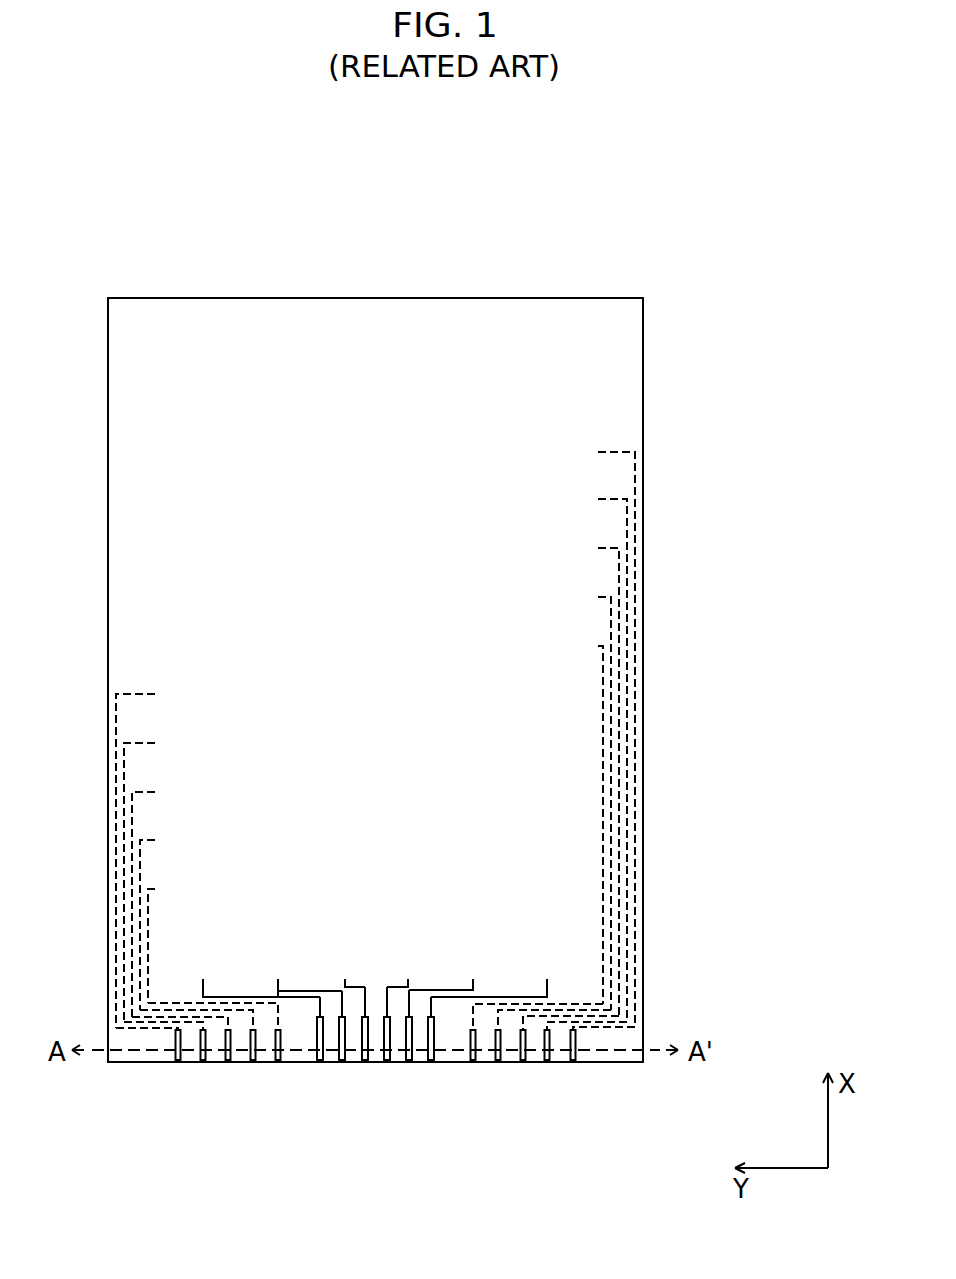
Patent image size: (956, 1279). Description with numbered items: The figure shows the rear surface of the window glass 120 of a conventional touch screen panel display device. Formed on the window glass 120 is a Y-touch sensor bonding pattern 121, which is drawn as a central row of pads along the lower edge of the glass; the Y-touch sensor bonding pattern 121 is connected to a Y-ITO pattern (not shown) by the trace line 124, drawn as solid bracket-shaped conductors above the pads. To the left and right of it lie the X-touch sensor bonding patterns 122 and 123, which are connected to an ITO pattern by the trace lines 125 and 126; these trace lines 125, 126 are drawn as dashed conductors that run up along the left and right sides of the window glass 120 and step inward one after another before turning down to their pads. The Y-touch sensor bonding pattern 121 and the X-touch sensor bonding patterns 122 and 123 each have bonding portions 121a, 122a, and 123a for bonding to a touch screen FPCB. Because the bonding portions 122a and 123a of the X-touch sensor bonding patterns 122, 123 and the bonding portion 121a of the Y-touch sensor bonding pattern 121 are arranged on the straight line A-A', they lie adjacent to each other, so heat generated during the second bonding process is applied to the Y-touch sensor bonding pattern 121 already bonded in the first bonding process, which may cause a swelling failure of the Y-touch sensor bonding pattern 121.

The window glass 120 is at (672, 265).
The Y-touch sensor bonding pattern 121 is at (305, 1019).
The bonding portion 121a is at (316, 1052).
The X-touch sensor bonding pattern 122 is at (166, 1034).
The bonding portion 122a is at (176, 1056).
The X-touch sensor bonding pattern 123 is at (588, 1034).
The bonding portion 123a is at (578, 1054).
The trace line 124 is at (217, 995).
The trace line 125 is at (116, 727).
The trace line 126 is at (635, 481).